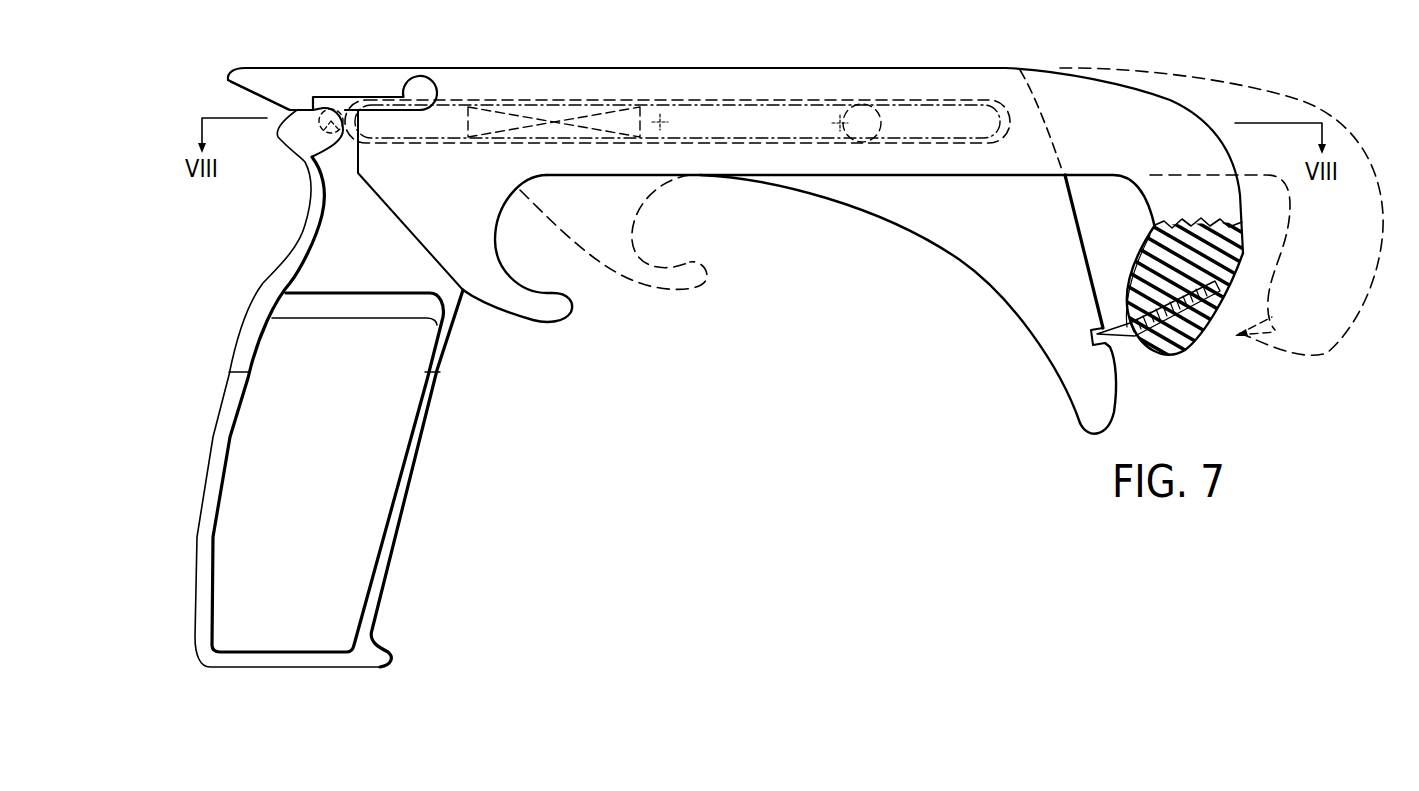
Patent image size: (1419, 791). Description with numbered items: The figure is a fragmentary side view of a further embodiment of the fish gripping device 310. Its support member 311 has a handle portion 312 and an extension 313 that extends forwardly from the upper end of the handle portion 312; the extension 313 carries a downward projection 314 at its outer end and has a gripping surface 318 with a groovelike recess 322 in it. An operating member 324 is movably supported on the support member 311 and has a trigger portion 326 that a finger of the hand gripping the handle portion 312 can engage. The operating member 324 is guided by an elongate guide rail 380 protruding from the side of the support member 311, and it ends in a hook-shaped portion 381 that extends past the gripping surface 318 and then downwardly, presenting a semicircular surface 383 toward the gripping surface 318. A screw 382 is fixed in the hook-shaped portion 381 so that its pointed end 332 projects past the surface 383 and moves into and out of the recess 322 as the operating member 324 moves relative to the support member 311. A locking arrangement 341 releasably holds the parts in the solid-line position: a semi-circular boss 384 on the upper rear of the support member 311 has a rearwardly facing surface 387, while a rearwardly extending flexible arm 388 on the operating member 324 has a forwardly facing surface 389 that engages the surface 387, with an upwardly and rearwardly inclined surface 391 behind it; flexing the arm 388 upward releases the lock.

The fish gripping device 310 is at (1040, 50).
The support member 311 is at (458, 347).
The handle portion 312 is at (373, 498).
The extension 313 is at (810, 180).
The downward projection 314 is at (1070, 367).
The gripping surface 318 is at (1080, 221).
The groovelike recess 322 is at (1105, 332).
The operating member 324 is at (737, 83).
The trigger portion 326 is at (535, 310).
The pointed end 332 is at (1120, 330).
The locking arrangement 341 is at (218, 68).
The guide rail 380 is at (352, 117).
The hook-shaped portion 381 is at (1173, 110).
The screw 382 is at (1217, 300).
The semicircular surface 383 is at (1127, 327).
The semi-circular boss 384 is at (307, 170).
The rearwardly facing surface 387 is at (322, 124).
The flexible arm 388 is at (293, 82).
The forwardly facing surface 389 is at (328, 93).
The inclined surface 391 is at (250, 97).